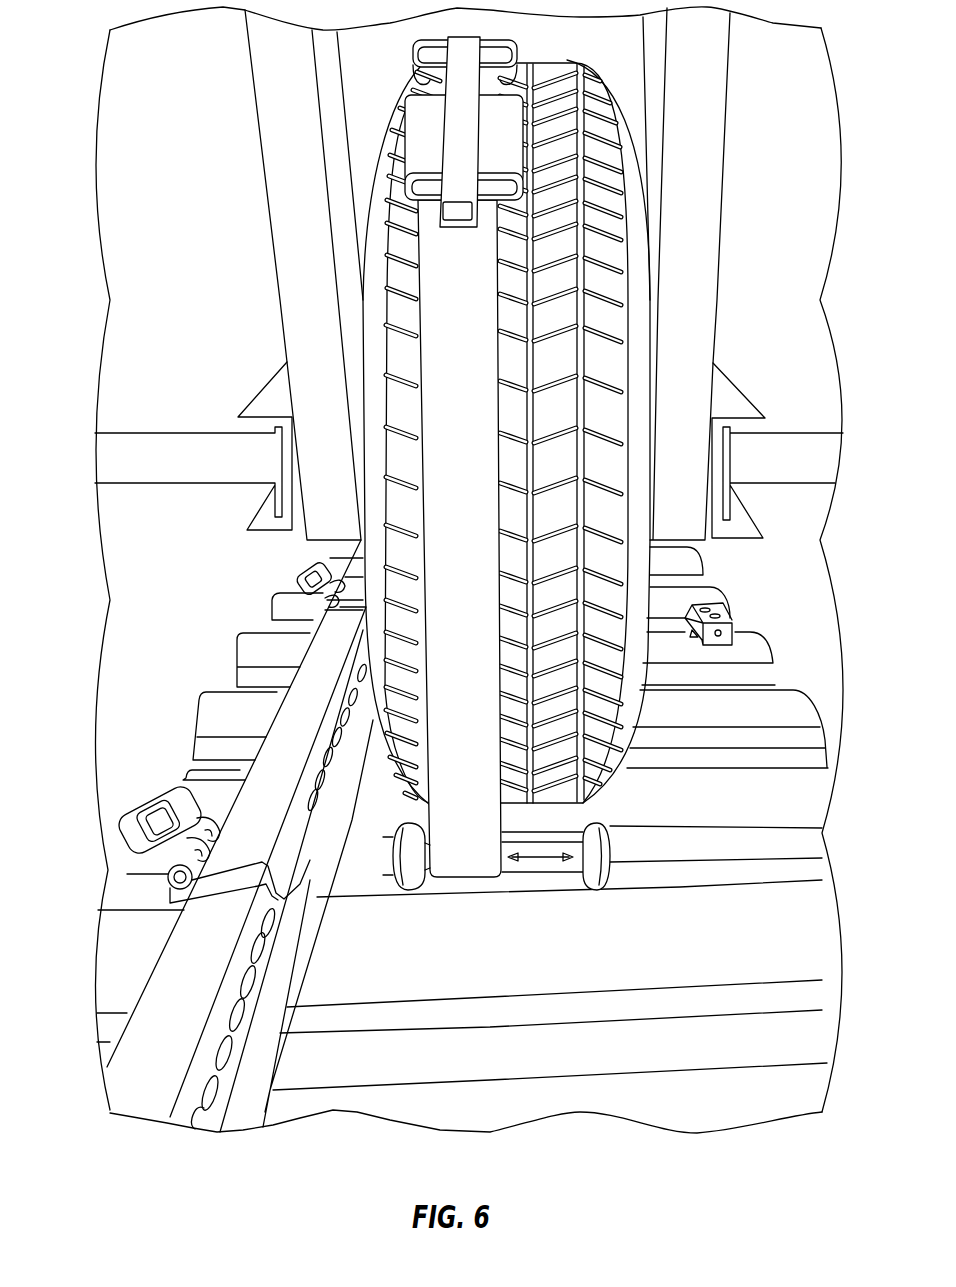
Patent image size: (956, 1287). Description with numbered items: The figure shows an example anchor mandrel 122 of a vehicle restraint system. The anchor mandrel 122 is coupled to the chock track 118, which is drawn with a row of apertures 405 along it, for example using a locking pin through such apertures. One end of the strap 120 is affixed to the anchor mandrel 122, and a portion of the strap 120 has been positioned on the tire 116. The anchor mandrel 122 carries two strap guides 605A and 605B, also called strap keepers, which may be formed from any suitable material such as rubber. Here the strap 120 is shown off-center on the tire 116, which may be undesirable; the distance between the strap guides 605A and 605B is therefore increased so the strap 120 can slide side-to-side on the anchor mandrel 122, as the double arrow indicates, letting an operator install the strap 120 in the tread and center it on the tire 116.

The tire 116 is at (377, 296).
The strap 120 is at (447, 357).
The anchor mandrel 122 is at (237, 857).
The chock track 118 is at (175, 1037).
The slotted mounting plate of rail 405 is at (203, 1093).
The strap guide 605A is at (398, 882).
The strap guide 605B is at (593, 873).